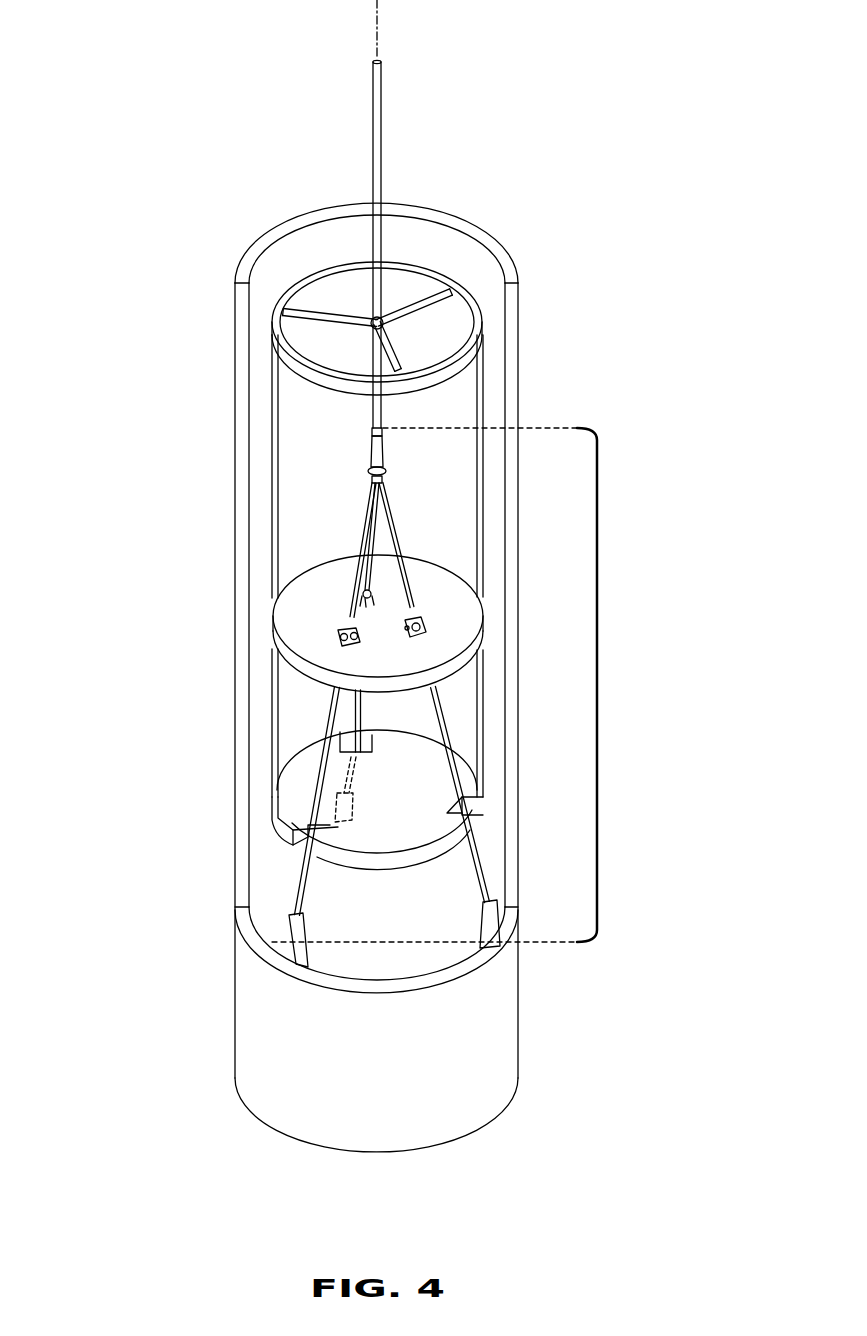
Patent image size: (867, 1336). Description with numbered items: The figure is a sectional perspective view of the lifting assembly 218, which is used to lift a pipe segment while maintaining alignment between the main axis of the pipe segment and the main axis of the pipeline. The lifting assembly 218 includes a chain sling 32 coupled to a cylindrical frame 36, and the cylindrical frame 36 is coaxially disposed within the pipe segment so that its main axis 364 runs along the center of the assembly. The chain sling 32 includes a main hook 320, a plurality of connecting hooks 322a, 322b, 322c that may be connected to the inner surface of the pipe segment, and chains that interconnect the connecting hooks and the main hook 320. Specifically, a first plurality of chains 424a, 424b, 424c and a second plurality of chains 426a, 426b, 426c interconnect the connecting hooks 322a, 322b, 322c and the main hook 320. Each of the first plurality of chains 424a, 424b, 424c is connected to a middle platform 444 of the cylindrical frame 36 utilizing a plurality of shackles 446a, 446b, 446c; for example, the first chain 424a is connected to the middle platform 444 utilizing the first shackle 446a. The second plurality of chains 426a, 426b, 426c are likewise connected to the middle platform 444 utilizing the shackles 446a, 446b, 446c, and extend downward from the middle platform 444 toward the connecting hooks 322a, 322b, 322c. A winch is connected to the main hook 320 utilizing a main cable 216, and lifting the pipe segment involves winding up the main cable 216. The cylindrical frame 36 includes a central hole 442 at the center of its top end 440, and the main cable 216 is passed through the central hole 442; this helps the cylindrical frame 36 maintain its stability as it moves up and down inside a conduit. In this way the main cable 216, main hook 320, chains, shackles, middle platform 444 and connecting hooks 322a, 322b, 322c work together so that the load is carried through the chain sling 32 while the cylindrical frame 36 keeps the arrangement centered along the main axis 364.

The lifting assembly 218 is at (68, 164).
The main axis of cylindrical frame 364 is at (375, 13).
The main cable 216 is at (377, 120).
The cylindrical frame 36 is at (485, 372).
The top end of cylindrical frame 440 is at (298, 296).
The central hole 442 is at (380, 316).
The main hook 320 is at (373, 452).
The first chain 424a is at (400, 537).
The chain of first plurality of chains 424b is at (355, 600).
The chain of first plurality of chains 424c is at (365, 547).
The first shackle 446a is at (424, 629).
The shackle 446b is at (340, 636).
The shackle 446c is at (375, 593).
The middle platform 444 is at (290, 648).
The chain of second plurality of chains 426a is at (462, 777).
The chain of second plurality of chains 426b is at (328, 722).
The chain of second plurality of chains 426c is at (362, 710).
The connecting hook 322a is at (290, 940).
The connecting hook 322b is at (488, 917).
The connecting hook 322c is at (340, 805).
The chain sling 32 is at (597, 686).